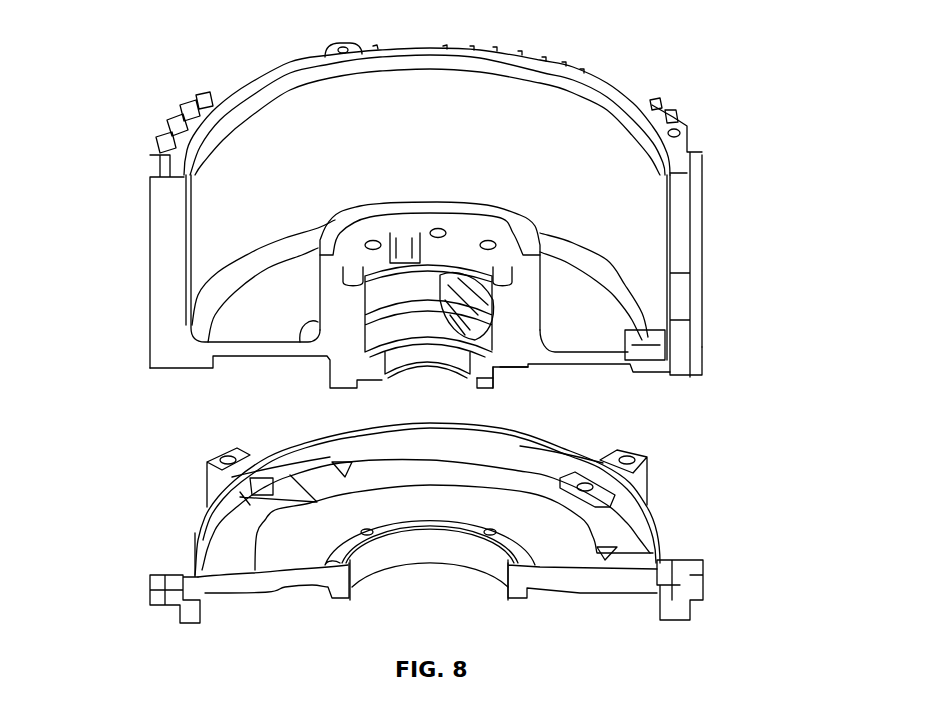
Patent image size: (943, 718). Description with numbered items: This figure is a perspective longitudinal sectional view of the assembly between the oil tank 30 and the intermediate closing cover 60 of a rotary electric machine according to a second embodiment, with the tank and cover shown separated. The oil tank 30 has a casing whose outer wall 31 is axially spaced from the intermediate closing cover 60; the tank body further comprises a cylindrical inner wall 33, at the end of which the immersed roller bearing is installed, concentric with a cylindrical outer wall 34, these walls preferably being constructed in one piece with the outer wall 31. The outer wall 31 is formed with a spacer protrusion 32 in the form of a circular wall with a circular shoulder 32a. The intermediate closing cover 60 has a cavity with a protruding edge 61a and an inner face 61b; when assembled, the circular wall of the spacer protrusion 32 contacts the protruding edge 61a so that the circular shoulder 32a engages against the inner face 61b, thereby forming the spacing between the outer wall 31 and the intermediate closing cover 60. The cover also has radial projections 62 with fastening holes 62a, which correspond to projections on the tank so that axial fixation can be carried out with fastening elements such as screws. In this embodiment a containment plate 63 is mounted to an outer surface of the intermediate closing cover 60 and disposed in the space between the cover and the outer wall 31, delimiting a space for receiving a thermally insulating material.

The oil tank 30 is at (437, 240).
The outer wall 31 is at (263, 360).
The spacer protrusion 32 is at (530, 382).
The circular shoulder 32a is at (482, 394).
The cylindrical inner wall 33 is at (535, 300).
The cylindrical outer wall 34 is at (158, 283).
The intermediate closing cover 60 is at (441, 549).
The protruding edge 61a is at (510, 565).
The inner face 61b is at (410, 558).
The radial projection 62 is at (200, 475).
The fastening hole 62a is at (222, 447).
The containment plate 63 is at (660, 519).